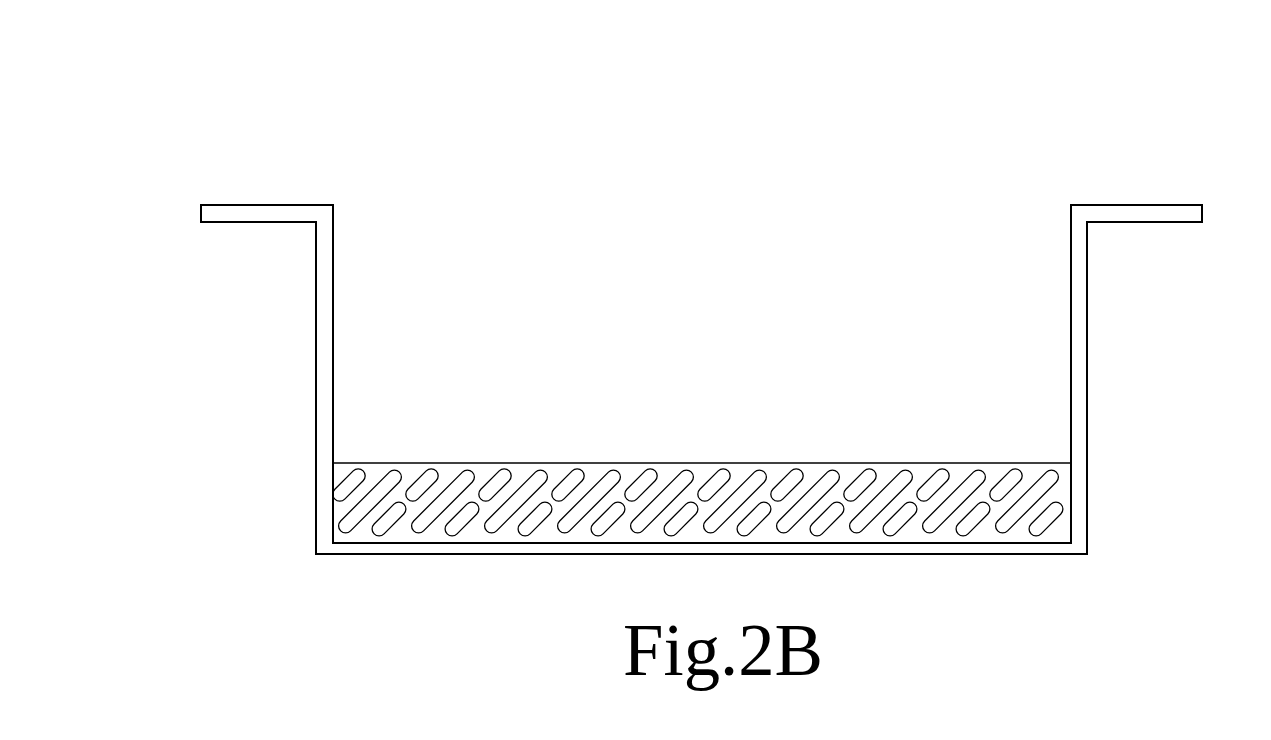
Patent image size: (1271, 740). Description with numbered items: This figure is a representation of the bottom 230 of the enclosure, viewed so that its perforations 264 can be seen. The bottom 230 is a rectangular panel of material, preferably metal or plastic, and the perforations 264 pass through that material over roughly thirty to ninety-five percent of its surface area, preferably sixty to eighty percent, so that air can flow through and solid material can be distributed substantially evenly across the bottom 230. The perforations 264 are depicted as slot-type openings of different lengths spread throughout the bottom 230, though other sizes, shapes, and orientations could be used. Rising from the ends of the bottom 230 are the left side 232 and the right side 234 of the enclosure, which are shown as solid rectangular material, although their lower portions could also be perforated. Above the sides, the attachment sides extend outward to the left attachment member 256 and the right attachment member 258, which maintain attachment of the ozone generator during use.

The bottom 230 is at (995, 554).
The left side 232 is at (332, 344).
The right side 234 is at (1087, 325).
The left attachment member 256 is at (265, 205).
The right attachment member 258 is at (1135, 205).
The perforations 264 is at (505, 522).